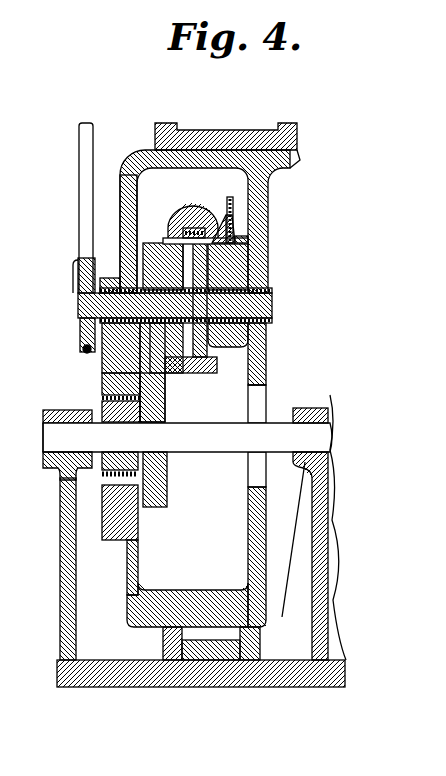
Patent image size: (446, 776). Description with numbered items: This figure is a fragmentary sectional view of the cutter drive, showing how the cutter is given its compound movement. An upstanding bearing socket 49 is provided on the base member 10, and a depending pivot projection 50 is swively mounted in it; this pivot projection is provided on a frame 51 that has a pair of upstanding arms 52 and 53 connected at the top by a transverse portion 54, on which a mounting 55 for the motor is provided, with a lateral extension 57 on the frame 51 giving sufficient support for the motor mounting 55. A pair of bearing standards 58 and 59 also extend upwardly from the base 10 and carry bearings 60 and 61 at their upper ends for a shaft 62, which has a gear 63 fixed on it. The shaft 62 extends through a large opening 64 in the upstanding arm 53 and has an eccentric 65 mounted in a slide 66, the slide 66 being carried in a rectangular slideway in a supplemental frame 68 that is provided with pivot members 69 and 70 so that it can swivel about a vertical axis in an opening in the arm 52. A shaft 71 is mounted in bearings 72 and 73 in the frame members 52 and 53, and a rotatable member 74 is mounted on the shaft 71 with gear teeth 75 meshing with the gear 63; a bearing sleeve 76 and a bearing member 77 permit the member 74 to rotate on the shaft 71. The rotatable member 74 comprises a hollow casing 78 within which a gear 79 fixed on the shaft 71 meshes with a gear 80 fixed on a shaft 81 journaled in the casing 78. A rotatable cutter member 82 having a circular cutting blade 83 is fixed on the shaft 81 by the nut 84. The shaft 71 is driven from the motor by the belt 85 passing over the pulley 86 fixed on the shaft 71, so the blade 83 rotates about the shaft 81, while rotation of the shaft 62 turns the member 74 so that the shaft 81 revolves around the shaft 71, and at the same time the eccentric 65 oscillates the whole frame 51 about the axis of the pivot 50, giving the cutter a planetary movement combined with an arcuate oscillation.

The base member 10 is at (180, 677).
The bearing socket 49 is at (163, 642).
The depending pivot projection 50 is at (240, 670).
The frame 51 is at (182, 595).
The upstanding arm 52 is at (122, 208).
The upstanding arm 53 is at (272, 229).
The transverse portion 54 is at (188, 160).
The motor mounting 55 is at (302, 131).
The lateral extension 57 is at (305, 176).
The bearing standard 58 is at (68, 590).
The bearing standard 59 is at (323, 560).
The bearing 60 is at (48, 415).
The bearing 61 is at (302, 410).
The shaft 62 is at (200, 440).
The gear 63 is at (167, 488).
The large opening 64 is at (273, 386).
The eccentric 65 is at (162, 418).
The slide 66 is at (100, 470).
The supplemental frame 68 is at (104, 507).
The pivot member 69 is at (104, 540).
The pivot member 70 is at (110, 372).
The shaft 71 is at (272, 298).
The bearing 72 is at (82, 256).
The bearing 73 is at (262, 290).
The rotatable member 74 is at (160, 245).
The gear teeth 75 is at (186, 373).
The bearing sleeve 76 is at (112, 278).
The bearing member 77 is at (272, 325).
The hollow casing 78 is at (192, 225).
The gear 79 is at (217, 268).
The gear 80 is at (206, 226).
The shaft 81 is at (262, 214).
The rotatable cutter member 82 is at (262, 204).
The circular cutting blade 83 is at (262, 193).
The nut 84 is at (262, 242).
The belt 85 is at (80, 157).
The pulley 86 is at (80, 283).